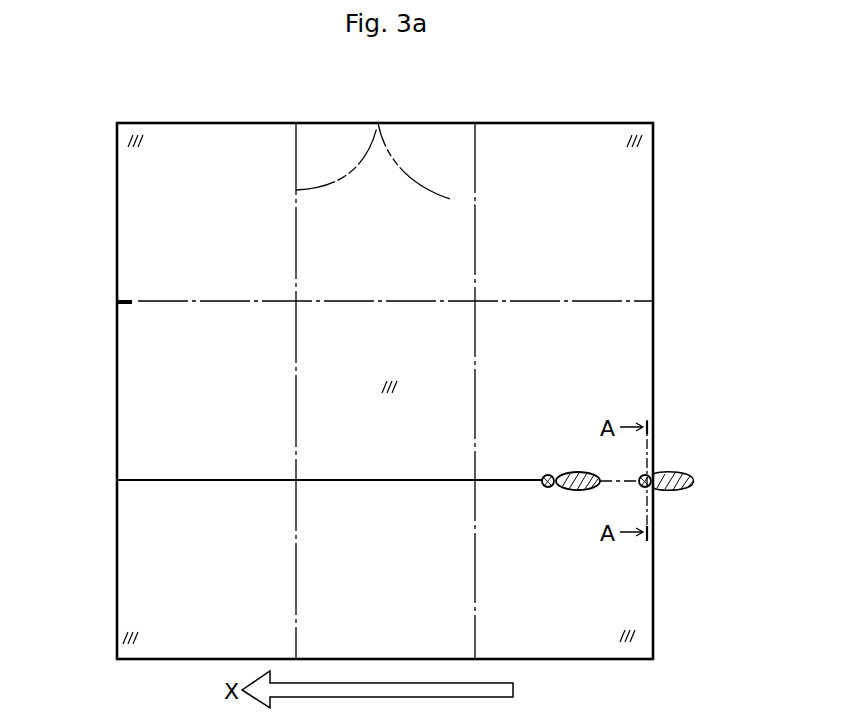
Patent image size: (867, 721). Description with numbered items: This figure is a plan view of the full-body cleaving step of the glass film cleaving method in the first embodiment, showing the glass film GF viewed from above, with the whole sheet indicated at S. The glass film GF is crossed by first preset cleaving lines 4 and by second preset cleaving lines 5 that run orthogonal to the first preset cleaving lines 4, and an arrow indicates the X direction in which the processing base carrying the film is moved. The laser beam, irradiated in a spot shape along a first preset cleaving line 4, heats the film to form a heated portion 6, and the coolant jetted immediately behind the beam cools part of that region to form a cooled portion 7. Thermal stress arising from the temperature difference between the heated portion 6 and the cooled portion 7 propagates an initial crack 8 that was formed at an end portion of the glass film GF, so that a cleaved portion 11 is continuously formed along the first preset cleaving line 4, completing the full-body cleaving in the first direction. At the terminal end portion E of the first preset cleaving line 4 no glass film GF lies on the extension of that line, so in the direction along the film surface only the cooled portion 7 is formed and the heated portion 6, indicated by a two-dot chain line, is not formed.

The first preset cleaving line 4 is at (610, 301).
The second preset cleaving line 5 is at (378, 123).
The heated portion 6 is at (571, 471).
The cooled portion 7 is at (545, 488).
The initial crack 8 is at (126, 304).
The cleaved portion 11 is at (386, 484).
The glass film GF is at (617, 222).
The sheet S is at (690, 156).
The terminal end portion E is at (662, 463).